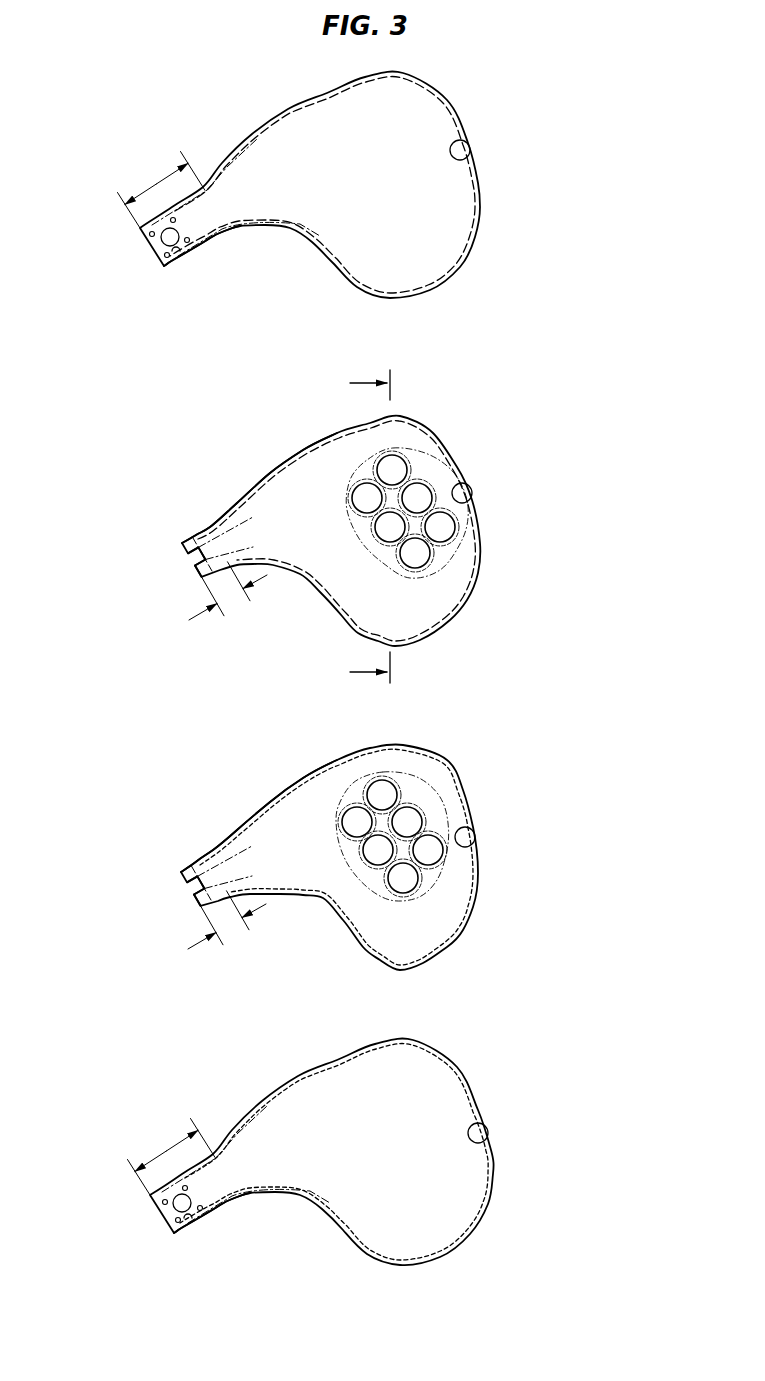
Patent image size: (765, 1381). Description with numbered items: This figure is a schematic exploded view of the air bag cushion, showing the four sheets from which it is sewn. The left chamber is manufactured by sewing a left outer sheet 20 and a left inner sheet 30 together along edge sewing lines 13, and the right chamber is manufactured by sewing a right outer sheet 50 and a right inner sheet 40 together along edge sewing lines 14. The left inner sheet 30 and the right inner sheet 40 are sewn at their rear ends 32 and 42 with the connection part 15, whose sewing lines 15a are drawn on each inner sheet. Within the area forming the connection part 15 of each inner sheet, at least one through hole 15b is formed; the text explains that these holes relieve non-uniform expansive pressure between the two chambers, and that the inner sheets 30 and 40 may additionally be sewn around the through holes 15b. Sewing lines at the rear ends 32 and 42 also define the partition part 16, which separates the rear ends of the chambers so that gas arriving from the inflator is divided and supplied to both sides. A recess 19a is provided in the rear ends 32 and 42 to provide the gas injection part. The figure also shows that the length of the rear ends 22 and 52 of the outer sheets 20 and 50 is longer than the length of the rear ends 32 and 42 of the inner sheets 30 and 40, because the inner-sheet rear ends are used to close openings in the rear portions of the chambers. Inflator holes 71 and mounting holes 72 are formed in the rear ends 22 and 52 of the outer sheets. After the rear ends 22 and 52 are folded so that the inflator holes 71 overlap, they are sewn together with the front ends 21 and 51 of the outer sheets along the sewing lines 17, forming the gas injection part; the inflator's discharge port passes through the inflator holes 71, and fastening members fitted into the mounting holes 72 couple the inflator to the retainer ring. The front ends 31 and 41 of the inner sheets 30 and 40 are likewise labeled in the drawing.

The edge sewing lines 13 is at (472, 847).
The edge sewing lines 14 is at (473, 160).
The connection part 15 is at (437, 457).
The sewing lines of the connection part 15a is at (360, 460).
The through hole 15b is at (415, 553).
The partition part 16 is at (198, 553).
The sewing lines 17 is at (178, 256).
The recess 19a is at (198, 567).
The left outer sheet 20 is at (383, 1141).
The front end 21 is at (473, 1072).
The rear end 22 is at (223, 1210).
The left inner sheet 30 is at (392, 829).
The front end 31 is at (448, 752).
The rear end 32 is at (190, 855).
The right inner sheet 40 is at (387, 508).
The front end 41 is at (418, 417).
The rear end 42 is at (194, 530).
The right outer sheet 50 is at (367, 191).
The front end 51 is at (472, 112).
The rear end 52 is at (203, 250).
The inflator hole 71 is at (172, 238).
The mounting hole 72 is at (162, 268).